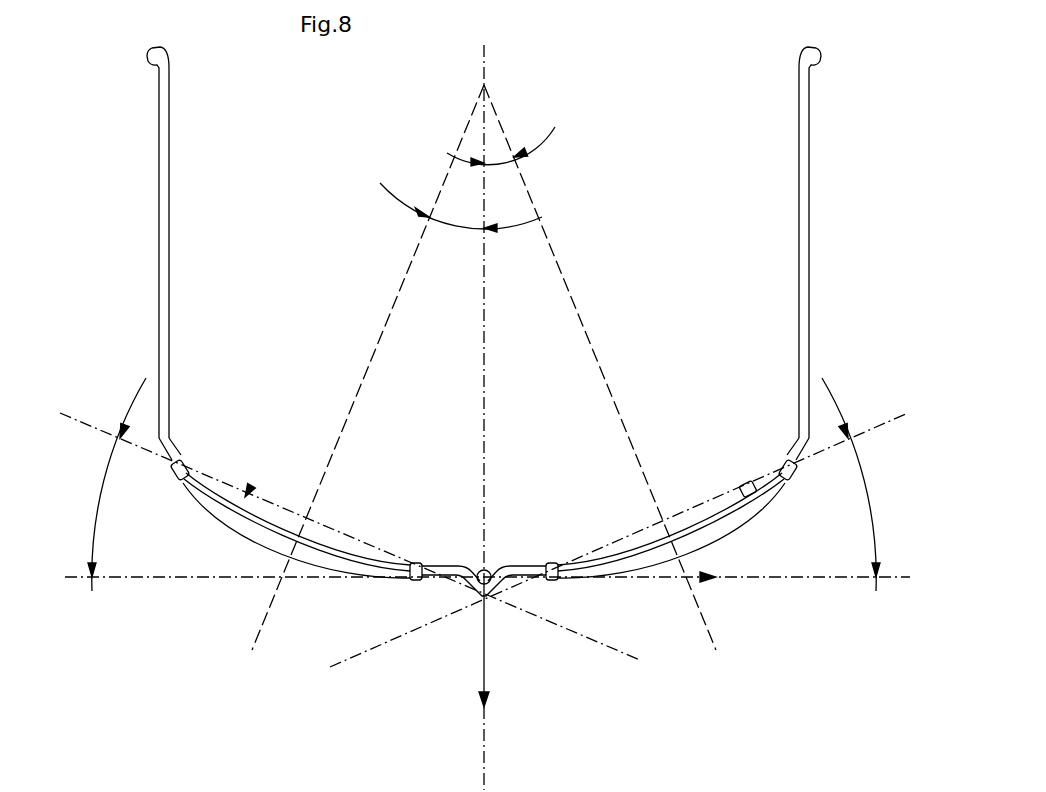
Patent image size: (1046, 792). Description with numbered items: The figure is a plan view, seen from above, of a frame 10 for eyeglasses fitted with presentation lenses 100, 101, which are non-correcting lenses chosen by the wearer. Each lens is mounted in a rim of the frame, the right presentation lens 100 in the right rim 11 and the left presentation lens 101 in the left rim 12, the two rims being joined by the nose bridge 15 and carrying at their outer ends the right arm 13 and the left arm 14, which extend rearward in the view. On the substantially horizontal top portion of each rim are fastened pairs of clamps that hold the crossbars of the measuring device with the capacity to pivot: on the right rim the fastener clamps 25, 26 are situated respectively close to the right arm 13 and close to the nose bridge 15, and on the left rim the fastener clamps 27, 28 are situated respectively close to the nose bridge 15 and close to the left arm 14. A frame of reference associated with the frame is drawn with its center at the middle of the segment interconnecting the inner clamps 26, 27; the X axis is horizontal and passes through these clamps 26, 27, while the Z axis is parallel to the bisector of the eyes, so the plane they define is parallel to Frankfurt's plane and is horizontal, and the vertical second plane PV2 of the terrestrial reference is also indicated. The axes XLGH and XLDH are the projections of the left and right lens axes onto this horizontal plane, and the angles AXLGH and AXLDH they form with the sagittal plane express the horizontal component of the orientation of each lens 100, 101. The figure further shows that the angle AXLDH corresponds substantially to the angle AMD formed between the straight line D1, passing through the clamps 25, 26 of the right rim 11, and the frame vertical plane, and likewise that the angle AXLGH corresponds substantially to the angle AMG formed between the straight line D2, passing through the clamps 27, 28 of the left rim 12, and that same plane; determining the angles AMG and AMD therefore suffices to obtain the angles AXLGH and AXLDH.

The frame 10 is at (252, 485).
The right rim 11 is at (313, 542).
The left rim 12 is at (746, 486).
The right arm 13 is at (170, 118).
The left arm 14 is at (808, 128).
The nose bridge 15 is at (468, 590).
The fastener clamp 25 is at (186, 460).
The fastener clamp 26 is at (412, 582).
The fastener clamp 27 is at (551, 562).
The fastener clamp 28 is at (794, 472).
The presentation lens 100 is at (240, 538).
The presentation lens 101 is at (744, 528).
The straight line D1 is at (120, 430).
The straight line D2 is at (848, 430).
The angle AMD is at (100, 500).
The angle AMG is at (872, 514).
The angle AXLDH is at (380, 186).
The angle AXLGH is at (553, 128).
The axis XLDH is at (264, 621).
The axis XLGH is at (706, 632).
The second vertical plane PV2 is at (803, 579).
The X axis X is at (713, 592).
The Z axis Z is at (495, 683).